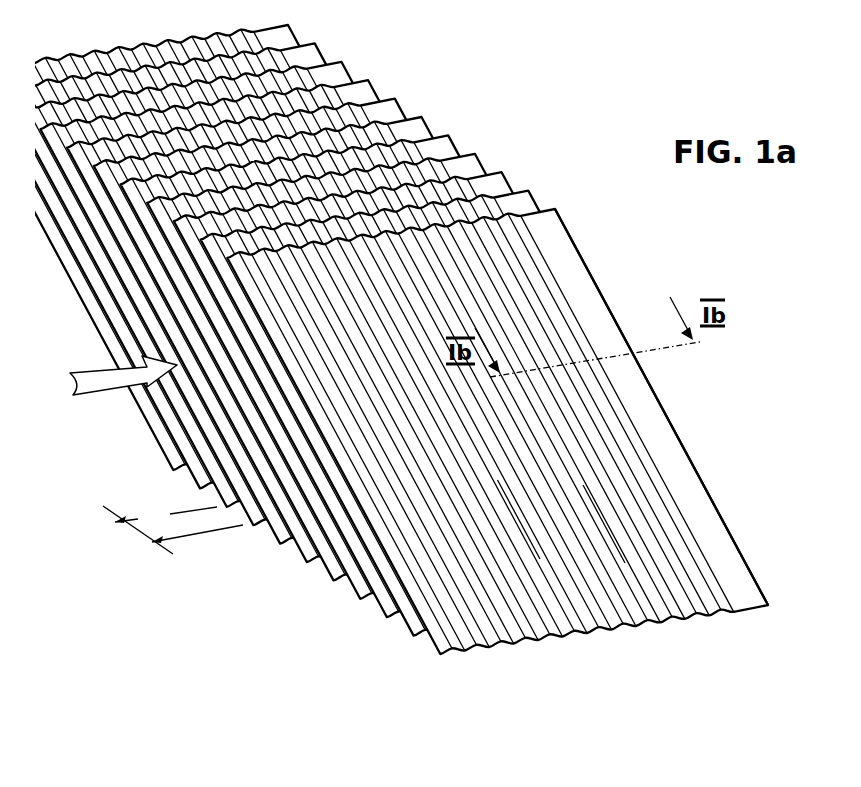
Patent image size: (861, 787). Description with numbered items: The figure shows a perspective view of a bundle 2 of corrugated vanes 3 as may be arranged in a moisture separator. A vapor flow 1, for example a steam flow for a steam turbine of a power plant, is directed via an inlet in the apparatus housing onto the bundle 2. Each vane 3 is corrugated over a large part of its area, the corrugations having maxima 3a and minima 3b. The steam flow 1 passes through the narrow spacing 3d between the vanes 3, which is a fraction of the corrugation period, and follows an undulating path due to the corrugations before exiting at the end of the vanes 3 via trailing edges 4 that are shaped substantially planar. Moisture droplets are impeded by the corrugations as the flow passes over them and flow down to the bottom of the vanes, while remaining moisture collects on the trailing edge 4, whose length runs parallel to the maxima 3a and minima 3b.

The vapor flow 1 is at (91, 381).
The bundle 2 is at (396, 391).
The vane 3 is at (289, 524).
The maxima 3a is at (517, 519).
The minima 3b is at (603, 522).
The spacing 3d is at (173, 530).
The trailing edge 4 is at (719, 536).